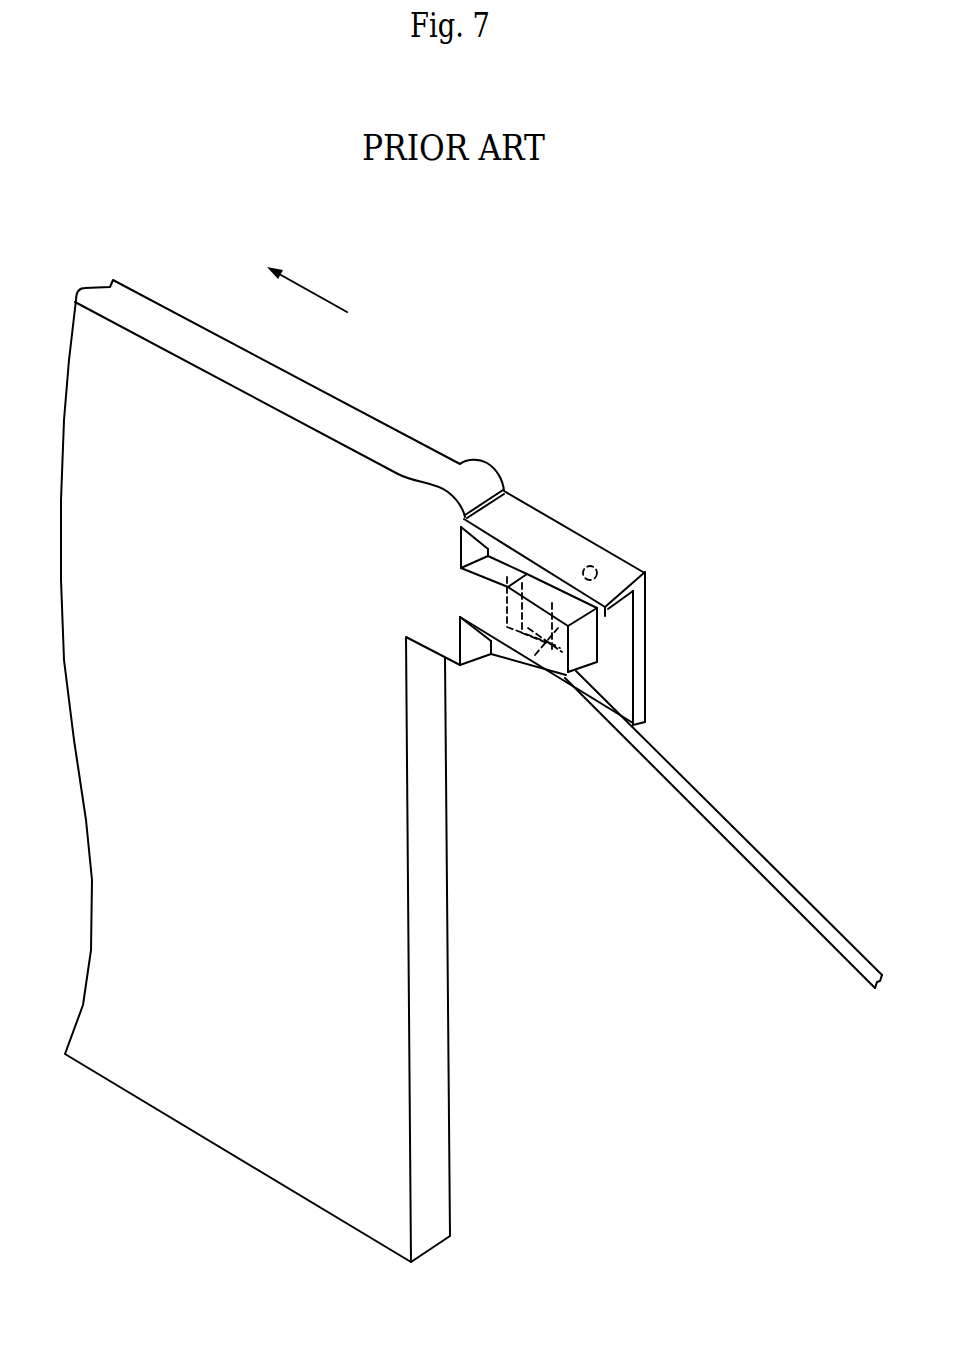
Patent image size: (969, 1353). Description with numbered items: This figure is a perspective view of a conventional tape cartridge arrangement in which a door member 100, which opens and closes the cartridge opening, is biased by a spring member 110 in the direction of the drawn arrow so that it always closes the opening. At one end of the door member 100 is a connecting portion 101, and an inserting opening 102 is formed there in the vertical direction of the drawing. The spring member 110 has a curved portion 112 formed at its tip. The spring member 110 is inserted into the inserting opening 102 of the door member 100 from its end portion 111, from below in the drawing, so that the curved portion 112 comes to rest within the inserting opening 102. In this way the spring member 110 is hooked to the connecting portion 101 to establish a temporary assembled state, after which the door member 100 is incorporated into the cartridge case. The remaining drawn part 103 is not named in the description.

The door member 100 is at (424, 430).
The connecting portion 101 is at (486, 614).
The inserting opening 102 is at (533, 578).
The upright wall of bracket 103 is at (620, 593).
The spring member 110 is at (804, 885).
The end portion 111 is at (583, 565).
The curved portion 112 is at (534, 650).